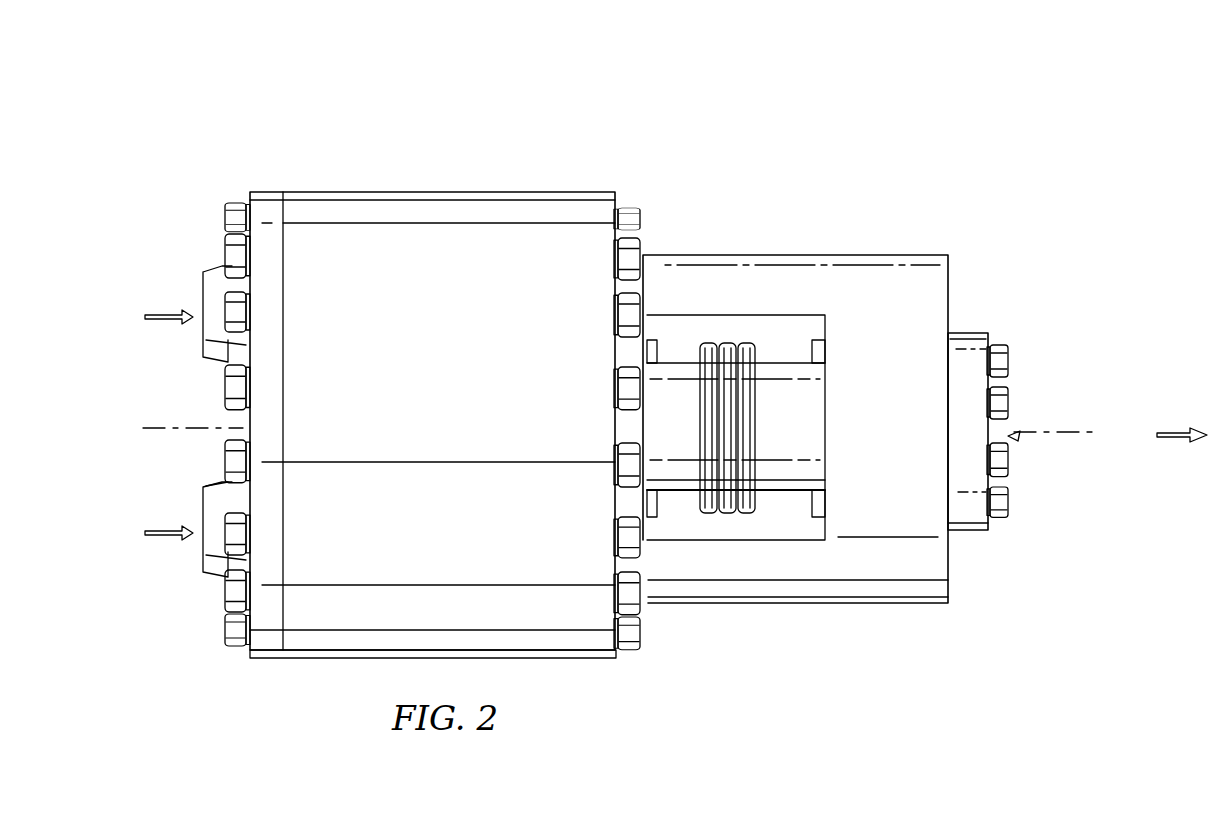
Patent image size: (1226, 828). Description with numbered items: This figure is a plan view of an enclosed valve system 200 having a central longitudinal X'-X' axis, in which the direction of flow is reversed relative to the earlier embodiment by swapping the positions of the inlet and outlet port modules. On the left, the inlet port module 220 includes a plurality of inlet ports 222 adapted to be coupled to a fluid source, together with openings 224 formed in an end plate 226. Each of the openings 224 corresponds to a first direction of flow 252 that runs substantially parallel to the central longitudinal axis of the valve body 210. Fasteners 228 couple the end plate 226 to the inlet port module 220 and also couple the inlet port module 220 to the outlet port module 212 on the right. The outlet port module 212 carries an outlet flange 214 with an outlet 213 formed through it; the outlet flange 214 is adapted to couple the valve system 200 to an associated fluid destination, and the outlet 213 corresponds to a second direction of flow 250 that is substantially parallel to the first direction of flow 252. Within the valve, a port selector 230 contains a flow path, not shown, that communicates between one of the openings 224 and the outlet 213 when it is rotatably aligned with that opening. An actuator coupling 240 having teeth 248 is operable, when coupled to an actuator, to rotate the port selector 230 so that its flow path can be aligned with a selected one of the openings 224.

The enclosed valve system 200 is at (421, 84).
The valve body 210 is at (600, 135).
The outlet port module 212 is at (880, 253).
The outlet 213 is at (1020, 441).
The outlet flange 214 is at (967, 332).
The inlet port module 220 is at (314, 160).
The inlet ports 222 is at (218, 487).
The openings 224 is at (203, 332).
The end plate 226 is at (262, 660).
The fasteners 228 is at (225, 248).
The port selector 230 is at (828, 418).
The actuator coupling 240 is at (645, 500).
The teeth 248 is at (745, 343).
The second direction of flow 250 is at (1175, 440).
The first direction of flow 252 is at (172, 315).